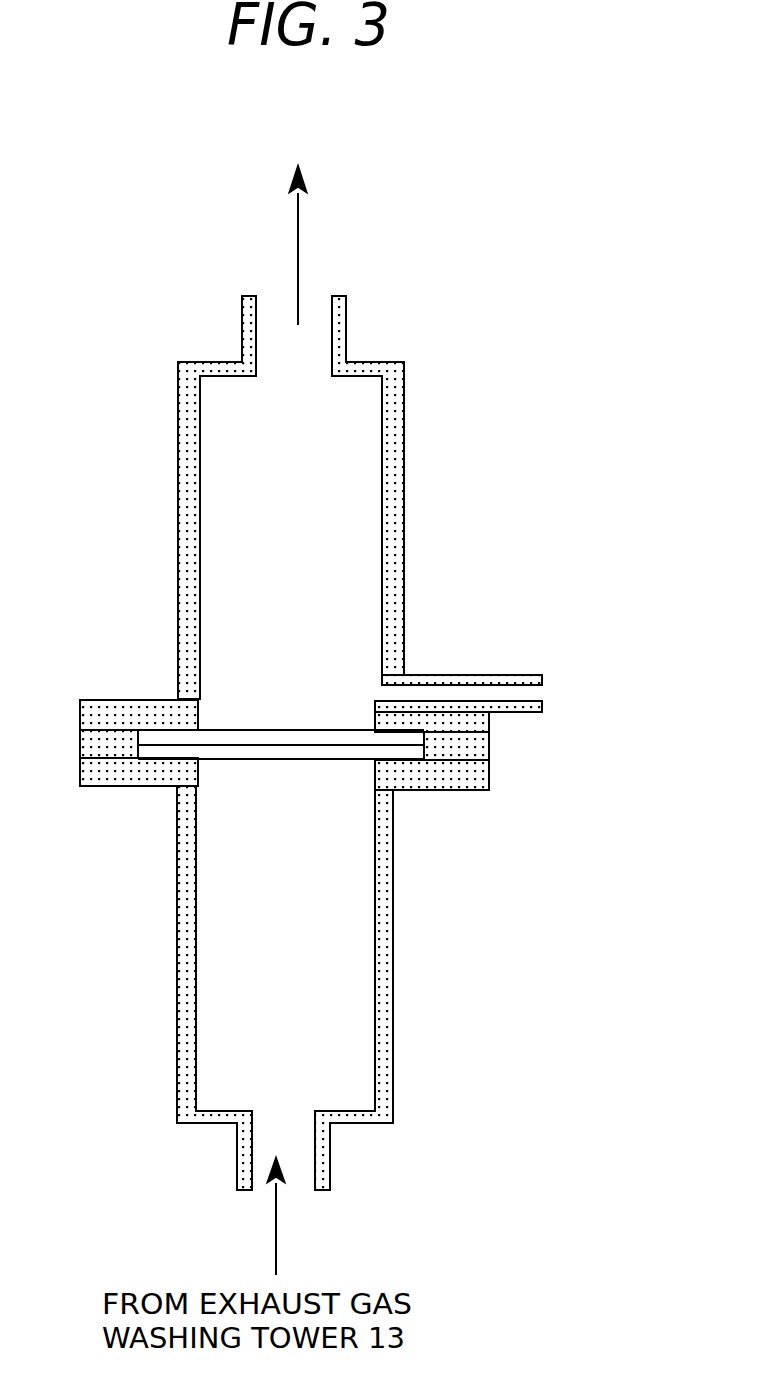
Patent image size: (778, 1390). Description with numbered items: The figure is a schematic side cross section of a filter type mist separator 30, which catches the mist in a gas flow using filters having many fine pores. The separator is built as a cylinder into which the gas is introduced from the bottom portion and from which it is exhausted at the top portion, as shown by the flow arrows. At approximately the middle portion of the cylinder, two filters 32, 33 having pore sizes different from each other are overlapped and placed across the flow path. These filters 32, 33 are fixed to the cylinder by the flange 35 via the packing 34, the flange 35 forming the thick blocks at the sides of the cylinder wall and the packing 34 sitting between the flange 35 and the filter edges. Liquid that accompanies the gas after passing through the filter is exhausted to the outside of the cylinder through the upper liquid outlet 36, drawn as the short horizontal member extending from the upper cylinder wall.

The filter type mist separator 30 is at (400, 458).
The filter 32 is at (248, 737).
The filter 33 is at (275, 753).
The packing 34 is at (478, 745).
The flange 35 is at (428, 782).
The upper liquid outlet 36 is at (527, 693).